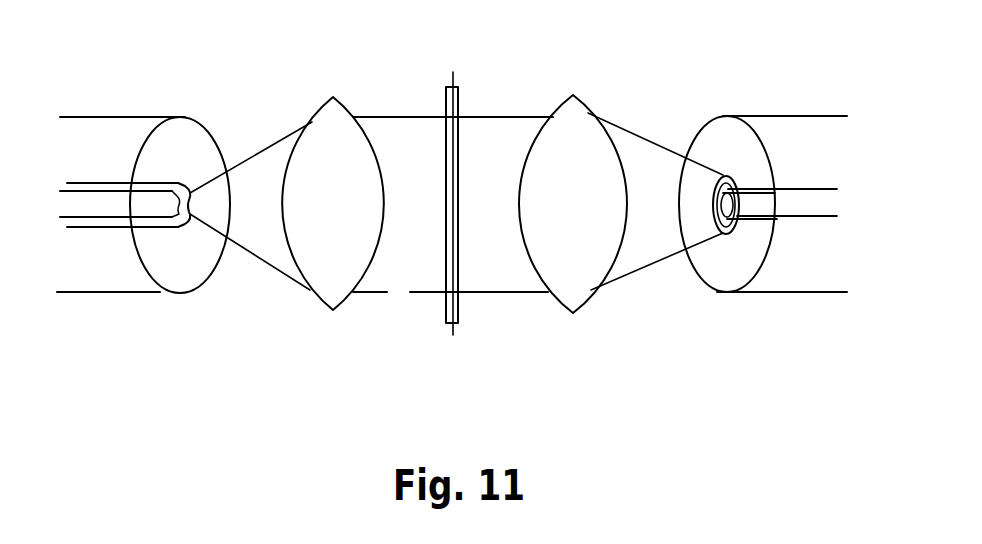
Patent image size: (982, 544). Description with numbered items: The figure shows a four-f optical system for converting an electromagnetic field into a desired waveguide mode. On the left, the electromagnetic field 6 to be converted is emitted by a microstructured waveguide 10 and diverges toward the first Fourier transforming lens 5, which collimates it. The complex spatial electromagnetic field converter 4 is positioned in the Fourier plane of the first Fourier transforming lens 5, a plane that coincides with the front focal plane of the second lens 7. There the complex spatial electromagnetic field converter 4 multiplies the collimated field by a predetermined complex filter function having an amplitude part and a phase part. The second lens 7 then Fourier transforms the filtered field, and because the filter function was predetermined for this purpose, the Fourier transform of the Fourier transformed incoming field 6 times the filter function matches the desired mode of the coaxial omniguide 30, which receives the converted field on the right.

The microstructured waveguide 10 is at (93, 275).
The first Fourier transforming lens 5 is at (323, 300).
The electromagnetic field 6 is at (407, 272).
The complex spatial electromagnetic field converter 4 is at (457, 93).
The second lens 7 is at (577, 287).
The coaxial omniguide 30 is at (773, 277).